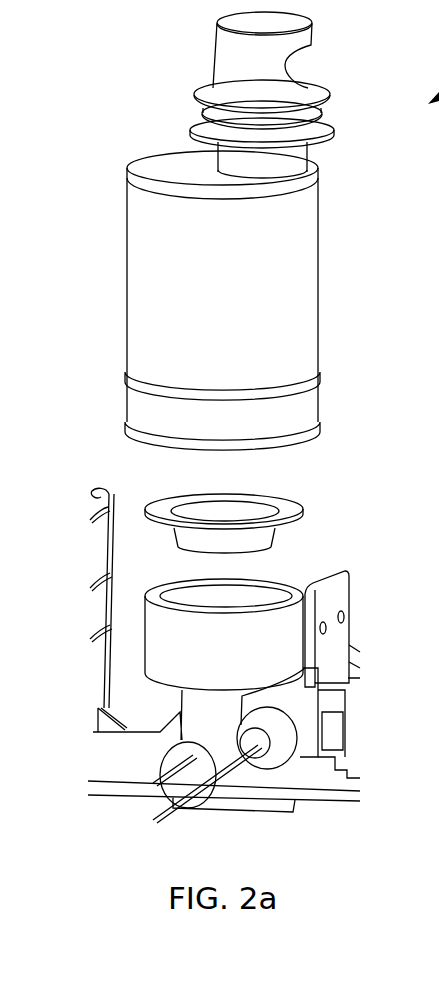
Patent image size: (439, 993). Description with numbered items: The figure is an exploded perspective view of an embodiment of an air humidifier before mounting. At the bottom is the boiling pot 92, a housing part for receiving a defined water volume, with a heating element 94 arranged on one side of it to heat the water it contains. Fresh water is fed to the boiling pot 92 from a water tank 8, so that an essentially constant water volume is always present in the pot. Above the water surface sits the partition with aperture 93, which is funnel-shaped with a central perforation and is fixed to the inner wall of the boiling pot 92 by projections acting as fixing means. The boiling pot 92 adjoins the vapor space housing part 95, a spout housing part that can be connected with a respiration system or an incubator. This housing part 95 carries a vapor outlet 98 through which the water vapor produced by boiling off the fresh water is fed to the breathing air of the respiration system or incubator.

The vapor outlet 98 is at (283, 62).
The vapor space housing part 95 is at (137, 279).
The partition with aperture 93 is at (146, 511).
The water tank 8 is at (96, 568).
The boiling pot 92 is at (152, 644).
The heating element 94 is at (187, 740).